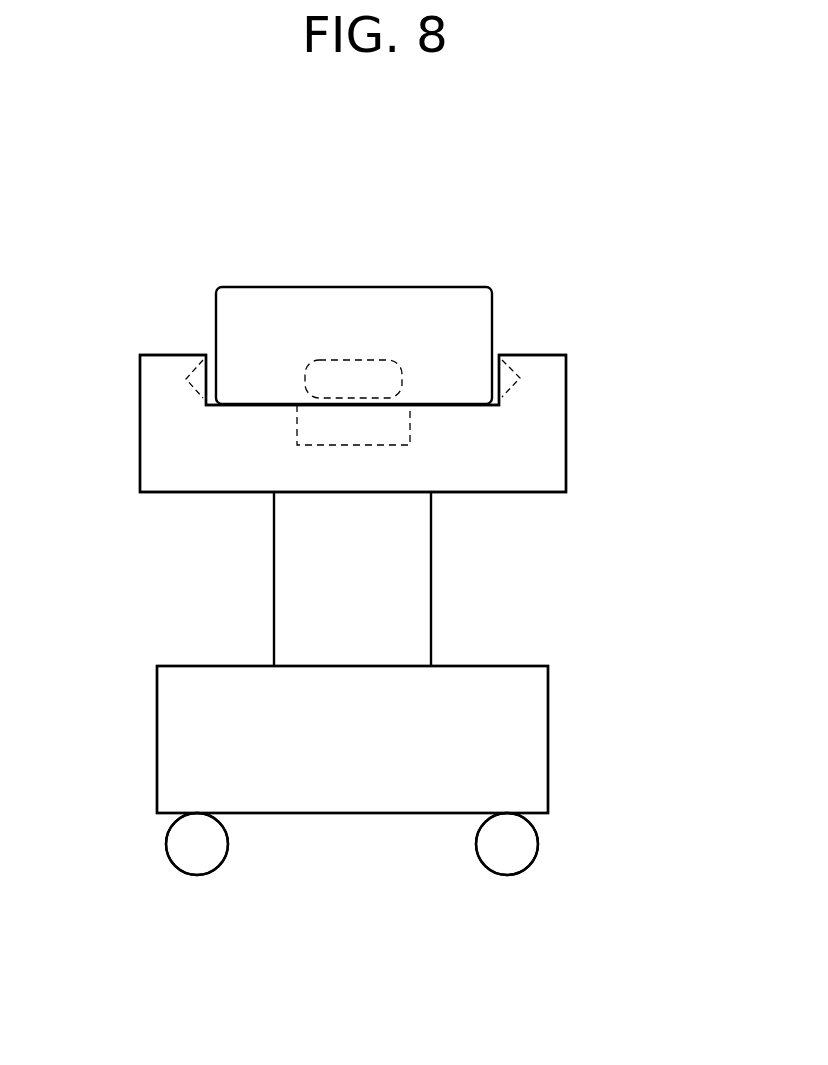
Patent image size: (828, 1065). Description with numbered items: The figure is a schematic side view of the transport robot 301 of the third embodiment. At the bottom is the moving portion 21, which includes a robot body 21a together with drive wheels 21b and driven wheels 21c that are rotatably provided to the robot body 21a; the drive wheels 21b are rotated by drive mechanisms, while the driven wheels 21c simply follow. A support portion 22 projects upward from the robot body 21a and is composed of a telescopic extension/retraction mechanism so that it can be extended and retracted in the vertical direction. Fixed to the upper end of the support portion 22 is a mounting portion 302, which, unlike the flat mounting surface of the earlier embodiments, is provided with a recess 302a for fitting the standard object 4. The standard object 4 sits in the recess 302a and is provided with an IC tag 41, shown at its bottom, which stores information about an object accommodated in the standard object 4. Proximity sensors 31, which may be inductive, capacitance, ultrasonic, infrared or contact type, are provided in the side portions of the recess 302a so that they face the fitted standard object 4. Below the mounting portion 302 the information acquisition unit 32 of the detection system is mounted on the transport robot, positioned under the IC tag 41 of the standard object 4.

The transport robot 301 is at (624, 203).
The mounting portion 302 is at (577, 447).
The recess 302a is at (500, 382).
The proximity sensor 31 is at (199, 368).
The information acquisition unit 32 is at (358, 444).
The standard object 4 is at (468, 300).
The IC tag 41 is at (352, 368).
The support portion 22 is at (302, 618).
The moving portion 21 is at (563, 692).
The robot body 21a is at (537, 750).
The drive wheel 21b is at (183, 845).
The driven wheel 21c is at (528, 847).